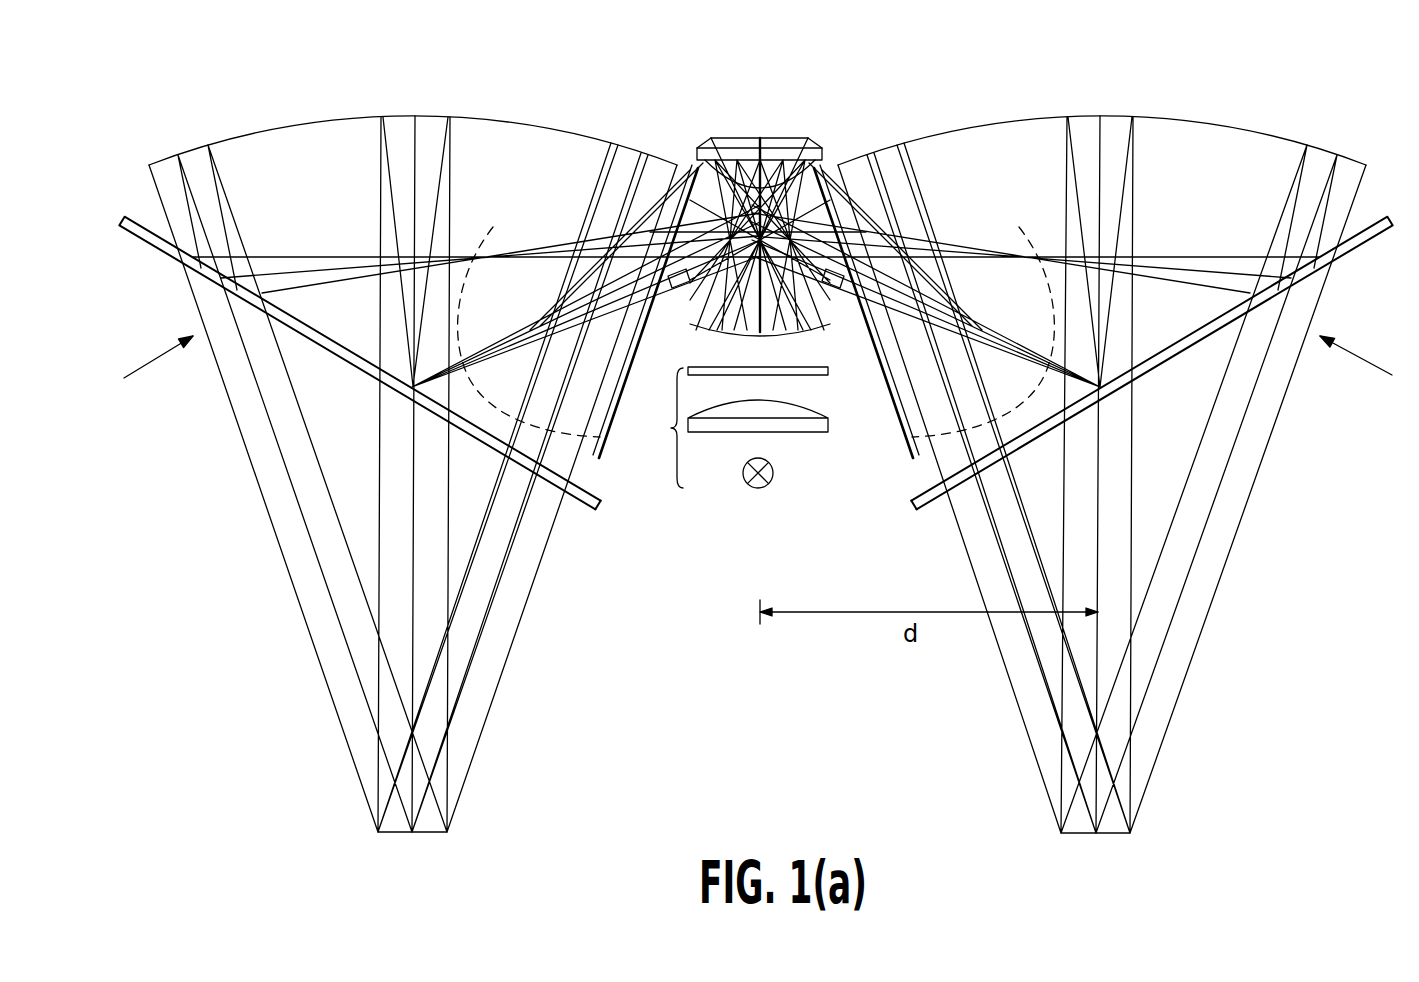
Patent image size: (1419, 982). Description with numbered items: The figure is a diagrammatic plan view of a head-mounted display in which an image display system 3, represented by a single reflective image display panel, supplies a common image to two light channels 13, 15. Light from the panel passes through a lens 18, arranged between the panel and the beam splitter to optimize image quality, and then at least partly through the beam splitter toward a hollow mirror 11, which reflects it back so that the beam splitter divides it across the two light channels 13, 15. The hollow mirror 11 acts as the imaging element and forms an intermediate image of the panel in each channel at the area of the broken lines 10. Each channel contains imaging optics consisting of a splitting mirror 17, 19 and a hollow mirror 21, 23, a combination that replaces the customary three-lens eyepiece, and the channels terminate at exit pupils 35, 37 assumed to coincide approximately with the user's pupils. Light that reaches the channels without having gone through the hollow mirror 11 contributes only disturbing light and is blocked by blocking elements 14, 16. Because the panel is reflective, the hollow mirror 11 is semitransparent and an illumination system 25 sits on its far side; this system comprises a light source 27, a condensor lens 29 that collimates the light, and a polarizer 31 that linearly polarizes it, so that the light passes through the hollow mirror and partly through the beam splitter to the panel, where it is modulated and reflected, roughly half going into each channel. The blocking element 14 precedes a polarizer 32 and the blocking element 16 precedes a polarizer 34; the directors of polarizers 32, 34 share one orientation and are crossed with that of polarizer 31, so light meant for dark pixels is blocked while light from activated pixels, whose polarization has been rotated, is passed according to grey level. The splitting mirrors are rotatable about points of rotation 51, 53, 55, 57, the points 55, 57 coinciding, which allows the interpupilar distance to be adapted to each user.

The image display system 3 is at (791, 138).
The intermediate image 10 is at (463, 309).
The hollow mirror 11 is at (782, 338).
The light channel 13 is at (1412, 396).
The blocking element 14 is at (921, 458).
The light channel 15 is at (121, 396).
The blocking element 16 is at (595, 458).
The splitting mirror 17 is at (917, 512).
The lens 18 is at (779, 167).
The splitting mirror 19 is at (597, 512).
The hollow mirror 21 is at (913, 130).
The hollow mirror 23 is at (252, 132).
The illumination system 25 is at (671, 428).
The light source 27 is at (773, 472).
The condensor lens 29 is at (828, 427).
The polarizer 31 is at (828, 372).
The polarizer 32 is at (900, 410).
The polarizer 34 is at (620, 398).
The exit pupil 35 is at (1106, 838).
The exit pupil 37 is at (432, 838).
The point of rotation 51 is at (1106, 390).
The point of rotation 53 is at (405, 389).
The point of rotation 55 is at (735, 150).
The point of rotation 57 is at (759, 143).